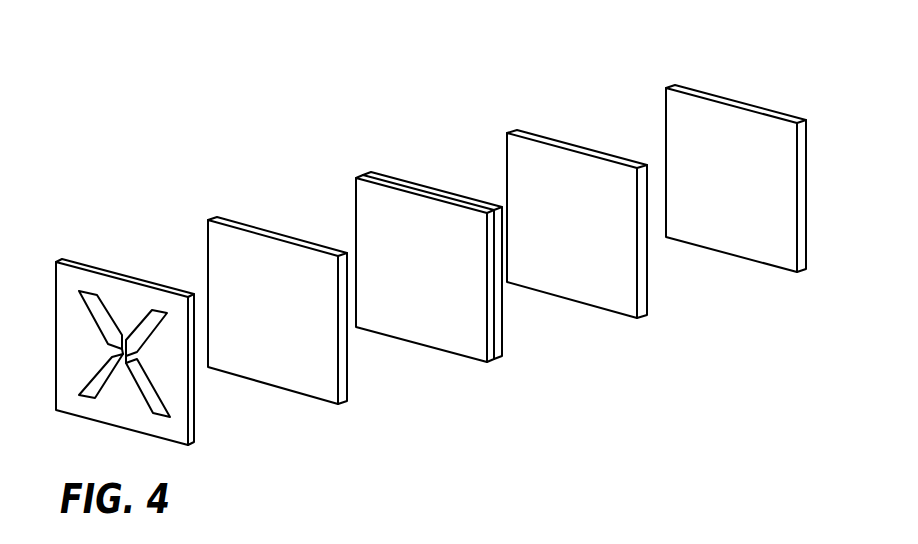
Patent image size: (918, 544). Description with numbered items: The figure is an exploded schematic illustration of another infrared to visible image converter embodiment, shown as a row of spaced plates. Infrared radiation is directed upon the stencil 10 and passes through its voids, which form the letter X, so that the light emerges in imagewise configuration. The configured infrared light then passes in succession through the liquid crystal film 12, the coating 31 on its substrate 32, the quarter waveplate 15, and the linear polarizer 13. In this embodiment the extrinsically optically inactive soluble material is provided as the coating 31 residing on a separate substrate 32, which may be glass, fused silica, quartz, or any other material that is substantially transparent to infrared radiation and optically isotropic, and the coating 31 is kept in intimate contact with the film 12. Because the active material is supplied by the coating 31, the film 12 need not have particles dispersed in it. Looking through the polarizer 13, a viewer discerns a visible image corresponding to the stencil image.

The stencil 10 is at (64, 264).
The liquid crystal film 12 is at (219, 222).
The coating 31 is at (357, 176).
The substrate 32 is at (371, 173).
The quarter waveplate 15 is at (523, 133).
The linear polarizer 13 is at (686, 88).